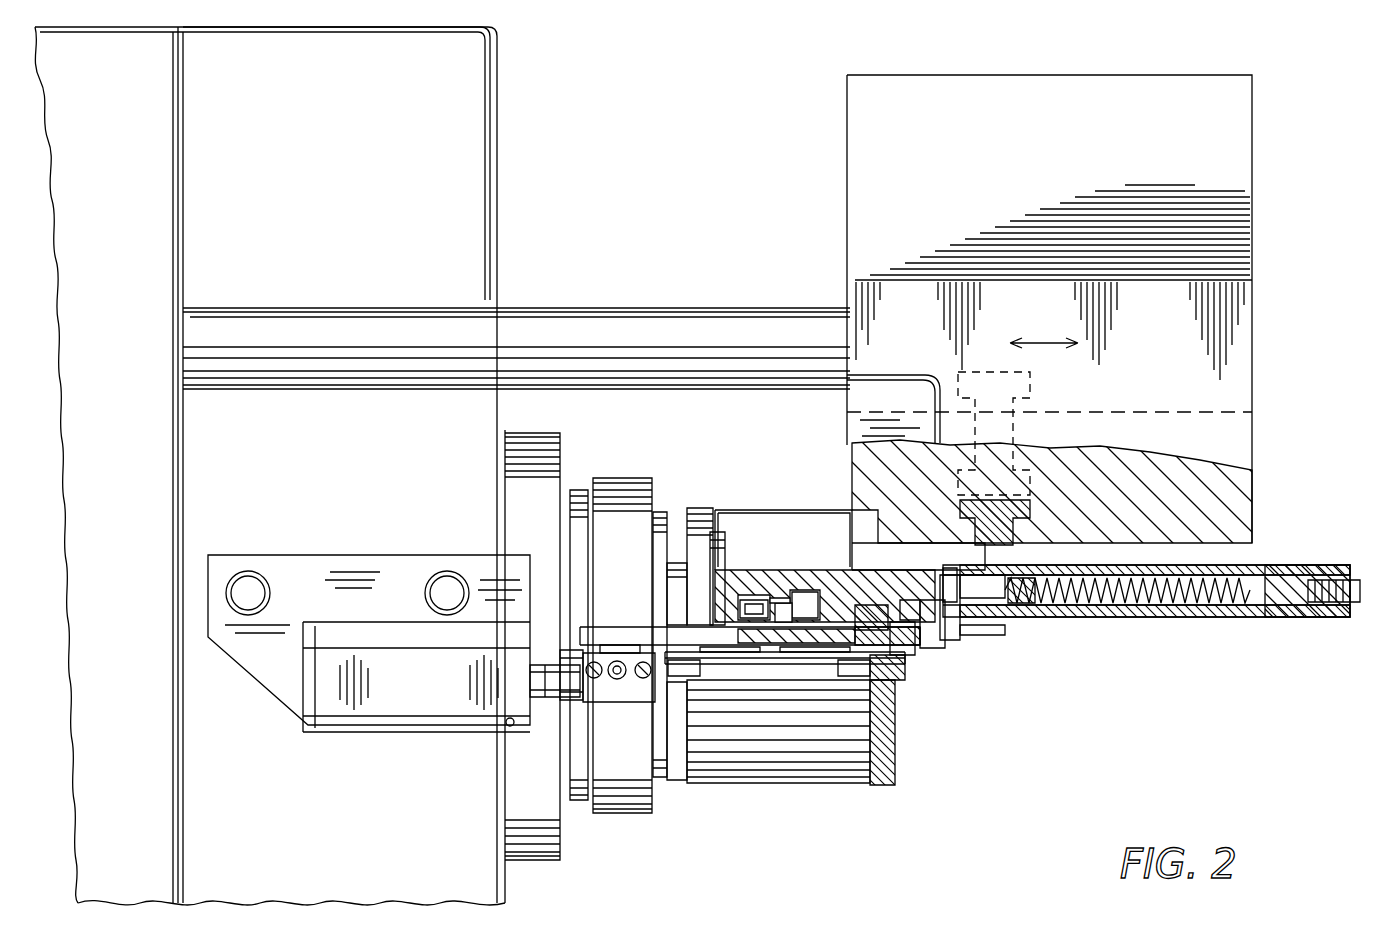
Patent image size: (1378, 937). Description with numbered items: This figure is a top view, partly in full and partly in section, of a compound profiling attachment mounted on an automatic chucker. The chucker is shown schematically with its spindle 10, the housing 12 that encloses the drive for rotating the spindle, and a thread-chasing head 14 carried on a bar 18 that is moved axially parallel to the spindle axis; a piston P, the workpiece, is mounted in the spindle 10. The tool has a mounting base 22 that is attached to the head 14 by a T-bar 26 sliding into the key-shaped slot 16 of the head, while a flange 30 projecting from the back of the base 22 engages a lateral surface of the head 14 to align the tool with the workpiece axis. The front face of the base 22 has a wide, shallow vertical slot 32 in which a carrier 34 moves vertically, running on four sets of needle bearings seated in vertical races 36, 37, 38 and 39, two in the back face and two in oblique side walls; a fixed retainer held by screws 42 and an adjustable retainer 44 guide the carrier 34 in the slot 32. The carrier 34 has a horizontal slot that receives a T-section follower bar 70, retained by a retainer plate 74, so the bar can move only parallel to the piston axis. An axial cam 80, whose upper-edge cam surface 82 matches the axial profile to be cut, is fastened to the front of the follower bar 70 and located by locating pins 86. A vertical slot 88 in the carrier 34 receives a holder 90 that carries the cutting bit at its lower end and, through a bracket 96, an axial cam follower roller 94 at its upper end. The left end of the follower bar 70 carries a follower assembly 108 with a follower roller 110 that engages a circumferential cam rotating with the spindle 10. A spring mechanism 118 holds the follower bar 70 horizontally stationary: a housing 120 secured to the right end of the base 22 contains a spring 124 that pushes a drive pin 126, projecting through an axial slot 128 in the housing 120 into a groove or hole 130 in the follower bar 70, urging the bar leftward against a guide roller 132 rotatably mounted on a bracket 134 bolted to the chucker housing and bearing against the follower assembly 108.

The spindle 10 is at (578, 762).
The housing 12 is at (347, 469).
The thread-chasing head 14 is at (1172, 354).
The key-shaped slot 16 is at (1018, 520).
The bar 18 is at (596, 332).
The mounting base 22 is at (1062, 556).
The T-bar 26 is at (1000, 510).
The flange 30 is at (880, 525).
The vertical slot 32 is at (822, 598).
The carrier 34 is at (922, 600).
The vertical race 36 is at (958, 642).
The vertical race 37 is at (902, 600).
The vertical race 38 is at (790, 603).
The vertical race 39 is at (780, 598).
The screws 42 is at (732, 600).
The adjustable retainer 44 is at (935, 650).
The follower bar 70 is at (682, 620).
The retainer plate 74 is at (722, 622).
The axial cam 80 is at (824, 666).
The cam surface 82 is at (738, 660).
The locating pins 86 is at (806, 660).
The vertical slot 88 is at (868, 606).
The holder 90 is at (896, 690).
The axial cam follower roller 94 is at (902, 668).
The bracket 96 is at (900, 650).
The follower assembly 108 is at (622, 708).
The follower roller 110 is at (622, 634).
The spring mechanism 118 is at (1266, 620).
The housing 120 is at (1300, 565).
The spring 124 is at (1180, 605).
The drive pin 126 is at (1005, 623).
The axial slot 128 is at (1130, 618).
The groove or hole 130 is at (1000, 634).
The guide roller 132 is at (555, 684).
The bracket 134 is at (335, 732).
The piston P is at (772, 750).